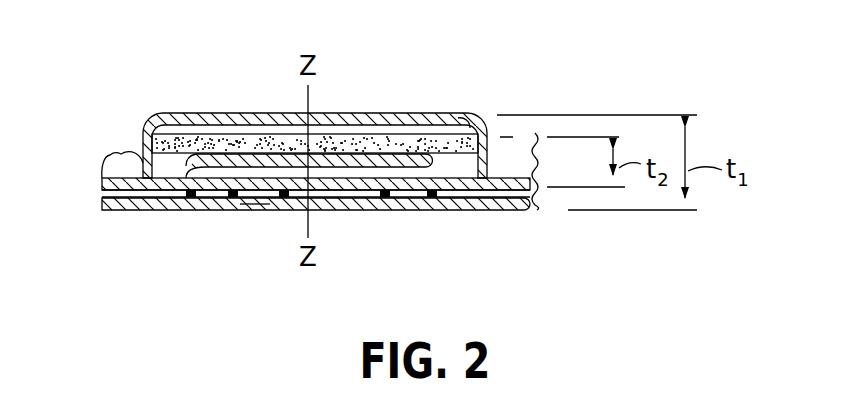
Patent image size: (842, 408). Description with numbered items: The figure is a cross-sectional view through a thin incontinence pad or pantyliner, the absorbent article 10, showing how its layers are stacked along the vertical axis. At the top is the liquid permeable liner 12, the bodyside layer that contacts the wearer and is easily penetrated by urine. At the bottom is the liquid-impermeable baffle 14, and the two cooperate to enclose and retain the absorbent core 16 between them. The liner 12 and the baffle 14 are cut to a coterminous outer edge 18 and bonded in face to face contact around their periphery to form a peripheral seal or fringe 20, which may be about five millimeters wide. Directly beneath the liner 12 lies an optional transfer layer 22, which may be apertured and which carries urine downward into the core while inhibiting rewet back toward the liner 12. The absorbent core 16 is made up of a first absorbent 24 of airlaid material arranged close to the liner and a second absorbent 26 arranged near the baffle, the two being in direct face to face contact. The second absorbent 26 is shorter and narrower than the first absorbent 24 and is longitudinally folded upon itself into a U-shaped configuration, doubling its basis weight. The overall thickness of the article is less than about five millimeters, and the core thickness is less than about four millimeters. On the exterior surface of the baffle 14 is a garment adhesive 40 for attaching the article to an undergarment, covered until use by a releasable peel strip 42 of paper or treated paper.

The absorbent article 10 is at (620, 66).
The liquid permeable liner 12 is at (391, 111).
The liquid-impermeable baffle 14 is at (530, 203).
The absorbent core 16 is at (547, 161).
The coterminous outer edge 18 is at (103, 179).
The peripheral seal or fringe 20 is at (121, 146).
The transfer layer 22 is at (256, 118).
The first absorbent 24 is at (467, 116).
The second absorbent 26 is at (457, 203).
The garment adhesive 40 is at (174, 203).
The releasable peel strip 42 is at (252, 206).